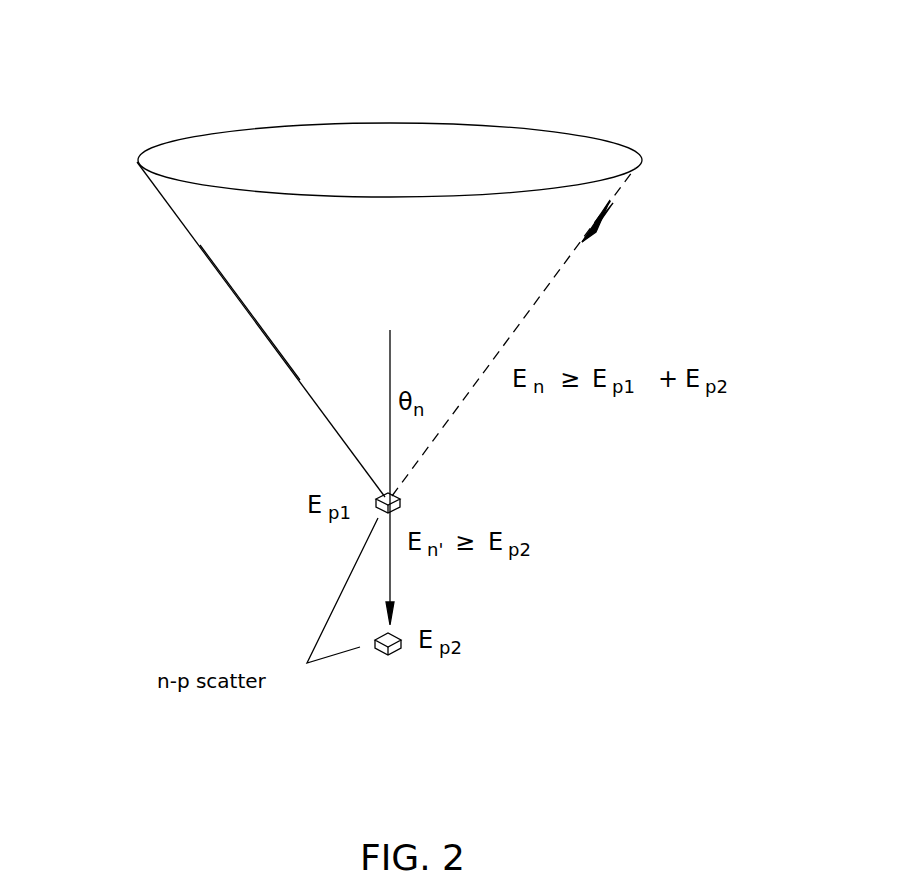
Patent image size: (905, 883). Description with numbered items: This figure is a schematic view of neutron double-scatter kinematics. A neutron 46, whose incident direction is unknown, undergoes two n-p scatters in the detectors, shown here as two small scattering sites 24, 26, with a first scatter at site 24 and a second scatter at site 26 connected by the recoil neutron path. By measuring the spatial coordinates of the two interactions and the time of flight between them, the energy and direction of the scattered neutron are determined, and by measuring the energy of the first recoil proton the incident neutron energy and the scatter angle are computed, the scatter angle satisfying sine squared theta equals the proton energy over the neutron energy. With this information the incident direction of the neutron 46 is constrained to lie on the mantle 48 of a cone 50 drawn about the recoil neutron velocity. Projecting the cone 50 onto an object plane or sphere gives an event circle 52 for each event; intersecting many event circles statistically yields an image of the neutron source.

The first scintillator detector 24 is at (400, 495).
The second scintillator detector 26 is at (478, 640).
The neutron 46 is at (622, 197).
The mantle 48 is at (258, 325).
The cone 50 is at (198, 150).
The event circle 52 is at (632, 148).